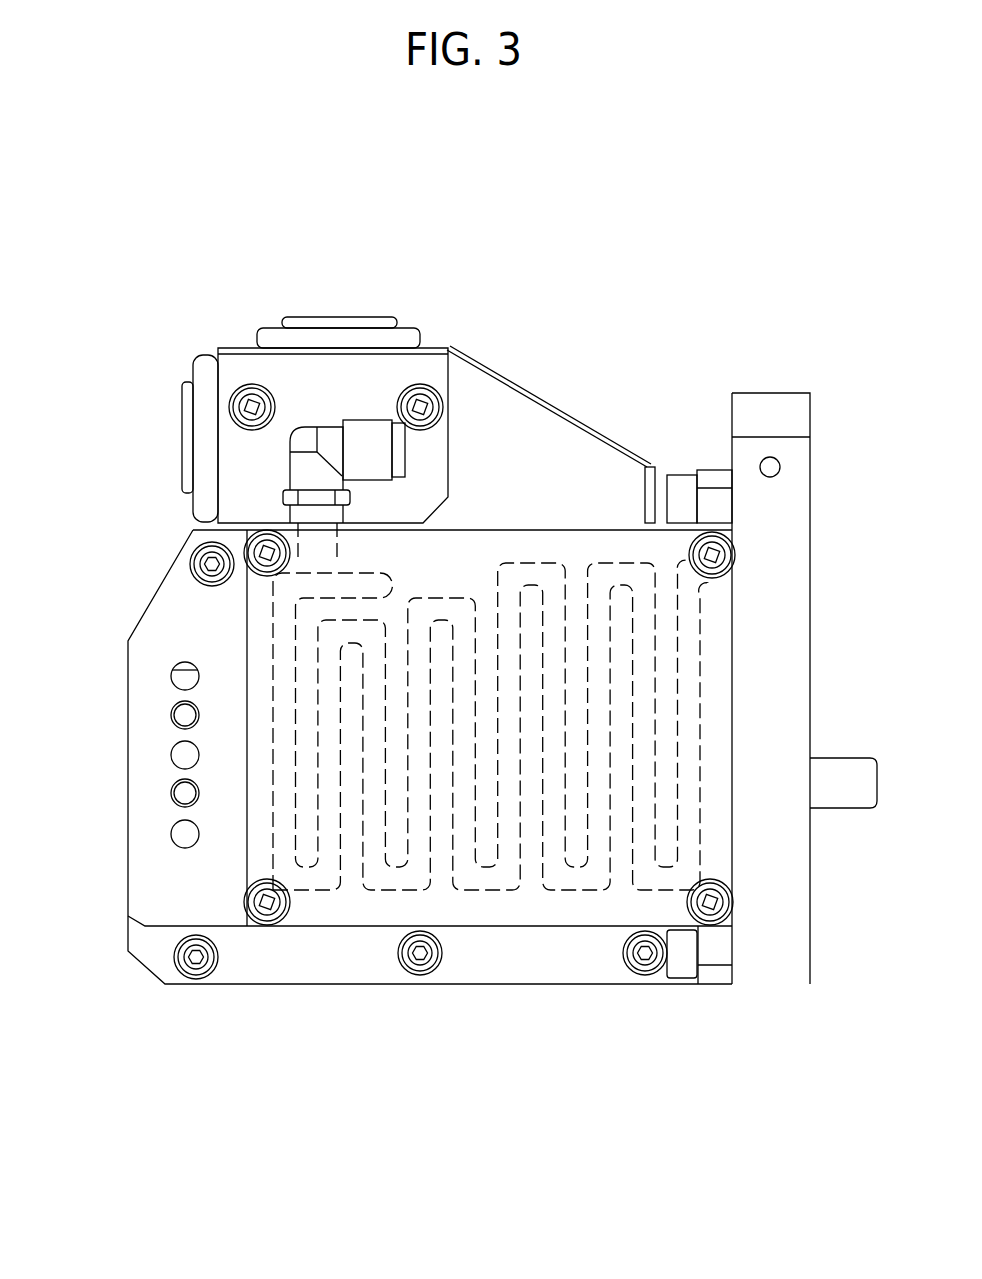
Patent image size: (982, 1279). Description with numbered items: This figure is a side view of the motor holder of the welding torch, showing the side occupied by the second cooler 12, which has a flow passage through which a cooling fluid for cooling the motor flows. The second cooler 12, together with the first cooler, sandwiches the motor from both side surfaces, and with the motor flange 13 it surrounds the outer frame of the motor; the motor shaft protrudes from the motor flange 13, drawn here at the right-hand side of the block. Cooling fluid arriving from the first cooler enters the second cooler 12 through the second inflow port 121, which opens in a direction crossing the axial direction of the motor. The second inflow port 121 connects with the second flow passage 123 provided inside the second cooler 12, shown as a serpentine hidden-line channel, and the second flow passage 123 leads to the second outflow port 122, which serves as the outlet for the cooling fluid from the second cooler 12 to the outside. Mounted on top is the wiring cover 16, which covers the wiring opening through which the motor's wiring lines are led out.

The second cooler 12 is at (128, 733).
The motor flange 13 is at (800, 978).
The wiring cover 16 is at (226, 347).
The second inflow port 121 is at (682, 562).
The second outflow port 122 is at (408, 453).
The second flow passage 123 is at (377, 890).